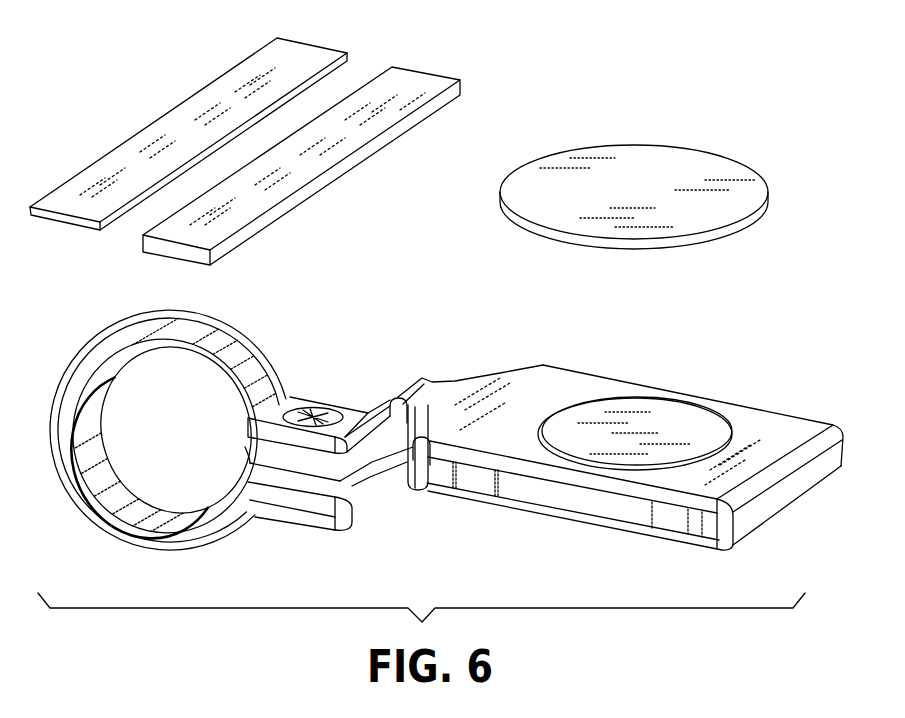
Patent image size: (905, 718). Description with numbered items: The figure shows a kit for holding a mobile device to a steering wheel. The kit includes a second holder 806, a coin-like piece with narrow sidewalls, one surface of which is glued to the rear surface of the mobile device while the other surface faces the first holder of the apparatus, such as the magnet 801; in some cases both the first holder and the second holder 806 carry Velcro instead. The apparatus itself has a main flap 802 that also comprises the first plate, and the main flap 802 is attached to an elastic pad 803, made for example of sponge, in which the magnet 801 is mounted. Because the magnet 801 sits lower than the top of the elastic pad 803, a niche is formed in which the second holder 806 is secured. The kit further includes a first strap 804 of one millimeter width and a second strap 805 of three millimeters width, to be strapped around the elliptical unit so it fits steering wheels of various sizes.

The magnet 801 is at (688, 423).
The main flap 802 is at (768, 409).
The elastic pad 803 is at (488, 442).
The first strap 804 is at (78, 205).
The second strap 805 is at (263, 201).
The second holder 806 is at (600, 147).